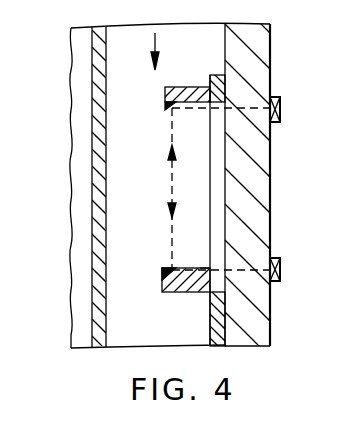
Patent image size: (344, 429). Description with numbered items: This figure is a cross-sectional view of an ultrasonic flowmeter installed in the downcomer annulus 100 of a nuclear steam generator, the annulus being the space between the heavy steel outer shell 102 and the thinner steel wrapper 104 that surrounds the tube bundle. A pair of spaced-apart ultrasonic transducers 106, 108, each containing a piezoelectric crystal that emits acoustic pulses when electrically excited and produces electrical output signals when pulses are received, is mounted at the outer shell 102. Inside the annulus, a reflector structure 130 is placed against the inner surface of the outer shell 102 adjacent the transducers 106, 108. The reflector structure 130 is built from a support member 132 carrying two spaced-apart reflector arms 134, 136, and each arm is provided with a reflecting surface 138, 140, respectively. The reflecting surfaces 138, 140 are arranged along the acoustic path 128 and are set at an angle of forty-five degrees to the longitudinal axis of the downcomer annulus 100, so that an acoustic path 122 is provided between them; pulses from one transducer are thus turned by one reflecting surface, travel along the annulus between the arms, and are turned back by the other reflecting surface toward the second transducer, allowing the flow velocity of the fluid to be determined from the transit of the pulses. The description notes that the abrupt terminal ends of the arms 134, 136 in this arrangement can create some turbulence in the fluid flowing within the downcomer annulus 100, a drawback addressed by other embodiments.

The downcomer annulus 100 is at (92, 114).
The outer shell 102 is at (258, 63).
The wrapper 104 is at (97, 292).
The ultrasonic transducer 106 is at (281, 102).
The ultrasonic transducer 108 is at (281, 270).
The acoustic path 122 is at (172, 193).
The acoustic path 128 is at (202, 268).
The reflector structure 130 is at (220, 198).
The support member 132 is at (218, 314).
The reflector arm 134 is at (187, 293).
The reflector arm 136 is at (190, 87).
The reflecting surface 138 is at (173, 262).
The reflecting surface 140 is at (174, 130).